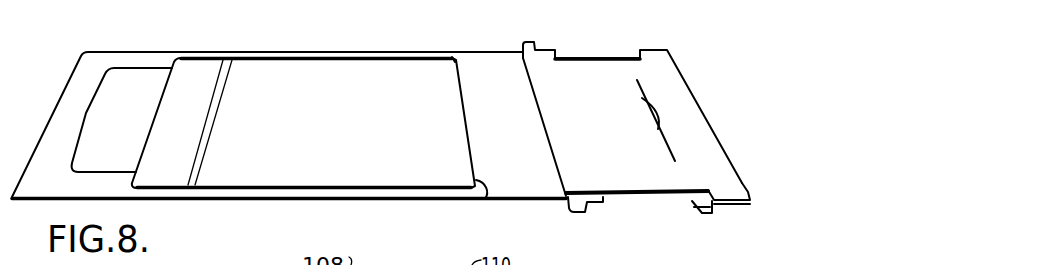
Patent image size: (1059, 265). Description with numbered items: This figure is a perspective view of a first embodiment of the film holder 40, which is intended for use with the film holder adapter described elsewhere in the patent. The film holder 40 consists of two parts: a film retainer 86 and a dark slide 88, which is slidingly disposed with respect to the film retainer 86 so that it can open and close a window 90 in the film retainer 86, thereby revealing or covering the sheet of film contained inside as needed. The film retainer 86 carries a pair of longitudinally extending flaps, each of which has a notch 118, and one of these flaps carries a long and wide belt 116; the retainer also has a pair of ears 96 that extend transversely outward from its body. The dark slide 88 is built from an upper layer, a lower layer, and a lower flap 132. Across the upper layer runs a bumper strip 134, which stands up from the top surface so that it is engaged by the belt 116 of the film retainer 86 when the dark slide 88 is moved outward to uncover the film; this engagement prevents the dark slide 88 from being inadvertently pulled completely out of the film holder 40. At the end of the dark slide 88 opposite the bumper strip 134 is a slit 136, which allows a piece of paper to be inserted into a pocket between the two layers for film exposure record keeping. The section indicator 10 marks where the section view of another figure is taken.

The film retainer 86 is at (141, 62).
The window 90 is at (138, 134).
The bumper strip 134 is at (213, 118).
The dark slide 88 is at (615, 136).
The ears 96 is at (534, 42).
The notch 118 is at (456, 57).
The film holder 40 is at (499, 22).
The belt 116 is at (493, 78).
The slit 136 is at (668, 150).
The lower flap 132 is at (704, 205).
The section line 10- 10 is at (380, 33).